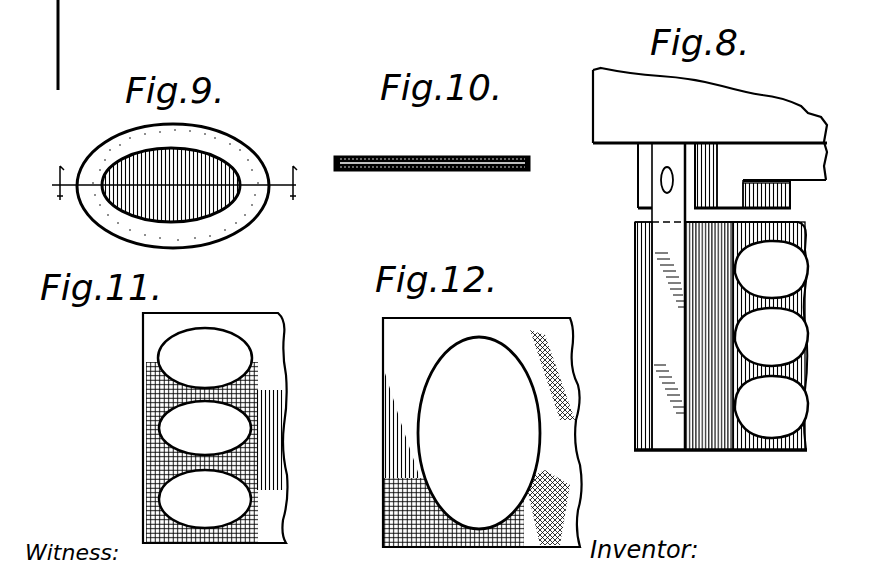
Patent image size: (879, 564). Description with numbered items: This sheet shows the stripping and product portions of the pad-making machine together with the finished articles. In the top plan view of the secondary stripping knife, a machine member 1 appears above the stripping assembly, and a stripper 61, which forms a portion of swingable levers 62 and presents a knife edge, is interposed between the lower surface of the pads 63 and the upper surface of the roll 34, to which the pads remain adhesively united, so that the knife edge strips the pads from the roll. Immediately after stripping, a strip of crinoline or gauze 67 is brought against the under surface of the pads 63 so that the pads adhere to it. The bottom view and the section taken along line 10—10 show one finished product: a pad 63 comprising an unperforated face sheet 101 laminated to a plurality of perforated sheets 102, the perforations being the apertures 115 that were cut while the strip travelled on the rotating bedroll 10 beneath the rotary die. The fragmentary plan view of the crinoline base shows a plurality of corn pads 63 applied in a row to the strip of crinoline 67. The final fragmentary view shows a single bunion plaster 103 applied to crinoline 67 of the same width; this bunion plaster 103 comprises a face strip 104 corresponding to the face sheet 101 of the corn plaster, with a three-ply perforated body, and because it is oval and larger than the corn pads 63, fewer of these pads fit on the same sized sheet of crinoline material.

In FIG. 8, the frame block 1 is at (612, 85).
In FIG. 8, the swingable levers 62 is at (786, 172).
In FIG. 8, the stripper 61 is at (671, 437).
In FIG. 8, the roll 34 is at (720, 440).
In FIG. 8, the pads 63 is at (773, 425).
In FIG. 9, the pads 63 is at (255, 140).
In FIG. 10, the pads 63 is at (509, 155).
In FIG. 11, the pads 63 is at (172, 421).
In FIG. 9, the strip of crinoline 67 is at (62, 32).
In FIG. 11, the strip of crinoline 67 is at (158, 467).
In FIG. 12, the strip of crinoline 67 is at (398, 520).
In FIG. 9, the apertures 115 is at (226, 220).
In FIG. 9, the bedroll 10 is at (175, 183).
In FIG. 10, the unperforated face sheet 101 is at (404, 160).
In FIG. 10, the perforated sheets 102 is at (348, 171).
In FIG. 12, the bunion plaster 103 is at (410, 393).
In FIG. 12, the face strip 104 is at (512, 388).